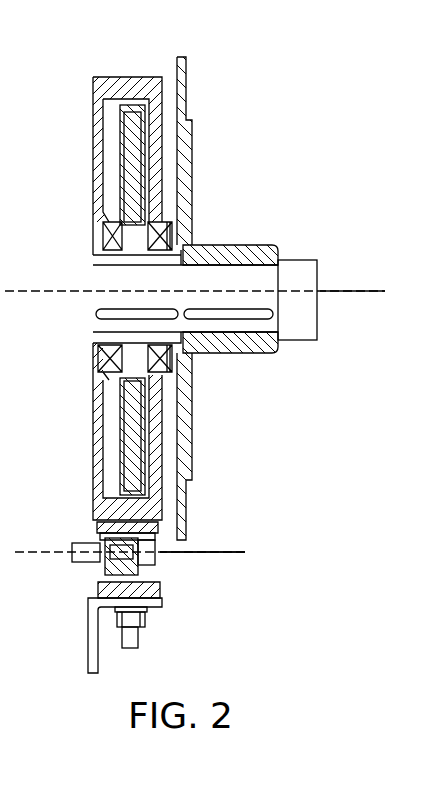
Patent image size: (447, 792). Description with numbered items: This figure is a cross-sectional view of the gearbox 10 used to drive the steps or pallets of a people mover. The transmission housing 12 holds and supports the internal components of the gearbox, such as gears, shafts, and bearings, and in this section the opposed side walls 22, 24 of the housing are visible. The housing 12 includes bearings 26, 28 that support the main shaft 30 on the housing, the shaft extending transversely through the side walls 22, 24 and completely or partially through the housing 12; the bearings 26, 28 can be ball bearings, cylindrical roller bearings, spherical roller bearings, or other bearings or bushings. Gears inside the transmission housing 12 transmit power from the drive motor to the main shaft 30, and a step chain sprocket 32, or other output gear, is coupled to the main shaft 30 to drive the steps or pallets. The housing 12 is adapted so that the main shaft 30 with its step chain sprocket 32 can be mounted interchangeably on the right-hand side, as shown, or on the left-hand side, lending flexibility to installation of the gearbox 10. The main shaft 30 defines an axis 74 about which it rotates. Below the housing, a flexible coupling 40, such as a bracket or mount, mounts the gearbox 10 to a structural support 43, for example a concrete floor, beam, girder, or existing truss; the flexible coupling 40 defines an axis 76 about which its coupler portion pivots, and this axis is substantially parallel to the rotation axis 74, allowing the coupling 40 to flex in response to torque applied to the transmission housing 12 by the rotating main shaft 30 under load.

The gearbox 10 is at (286, 94).
The transmission housing 12 is at (93, 150).
The side wall 22 is at (146, 110).
The side wall 24 is at (102, 458).
The bearing 26 is at (102, 353).
The bearing 28 is at (163, 238).
The main shaft 30 is at (297, 327).
The step chain sprocket 32 is at (184, 70).
The flexible coupling 40 is at (145, 572).
The structural support 43 is at (90, 633).
The axis 74 is at (353, 292).
The axis 76 is at (215, 551).